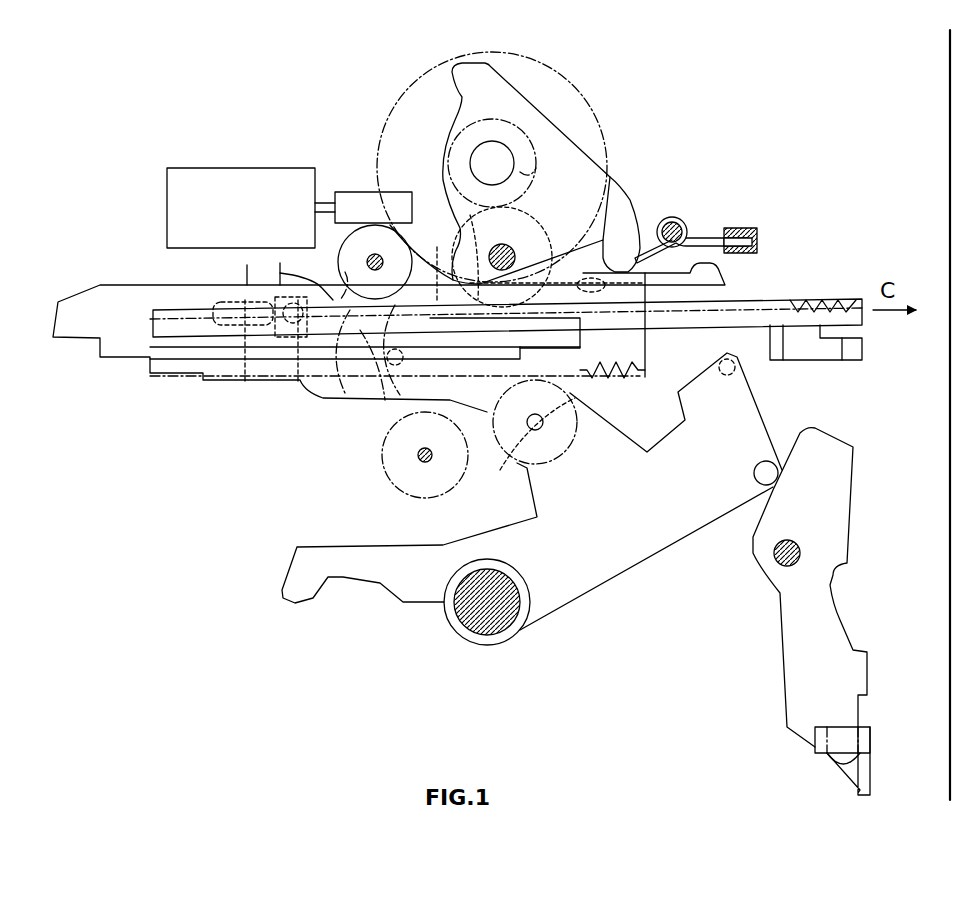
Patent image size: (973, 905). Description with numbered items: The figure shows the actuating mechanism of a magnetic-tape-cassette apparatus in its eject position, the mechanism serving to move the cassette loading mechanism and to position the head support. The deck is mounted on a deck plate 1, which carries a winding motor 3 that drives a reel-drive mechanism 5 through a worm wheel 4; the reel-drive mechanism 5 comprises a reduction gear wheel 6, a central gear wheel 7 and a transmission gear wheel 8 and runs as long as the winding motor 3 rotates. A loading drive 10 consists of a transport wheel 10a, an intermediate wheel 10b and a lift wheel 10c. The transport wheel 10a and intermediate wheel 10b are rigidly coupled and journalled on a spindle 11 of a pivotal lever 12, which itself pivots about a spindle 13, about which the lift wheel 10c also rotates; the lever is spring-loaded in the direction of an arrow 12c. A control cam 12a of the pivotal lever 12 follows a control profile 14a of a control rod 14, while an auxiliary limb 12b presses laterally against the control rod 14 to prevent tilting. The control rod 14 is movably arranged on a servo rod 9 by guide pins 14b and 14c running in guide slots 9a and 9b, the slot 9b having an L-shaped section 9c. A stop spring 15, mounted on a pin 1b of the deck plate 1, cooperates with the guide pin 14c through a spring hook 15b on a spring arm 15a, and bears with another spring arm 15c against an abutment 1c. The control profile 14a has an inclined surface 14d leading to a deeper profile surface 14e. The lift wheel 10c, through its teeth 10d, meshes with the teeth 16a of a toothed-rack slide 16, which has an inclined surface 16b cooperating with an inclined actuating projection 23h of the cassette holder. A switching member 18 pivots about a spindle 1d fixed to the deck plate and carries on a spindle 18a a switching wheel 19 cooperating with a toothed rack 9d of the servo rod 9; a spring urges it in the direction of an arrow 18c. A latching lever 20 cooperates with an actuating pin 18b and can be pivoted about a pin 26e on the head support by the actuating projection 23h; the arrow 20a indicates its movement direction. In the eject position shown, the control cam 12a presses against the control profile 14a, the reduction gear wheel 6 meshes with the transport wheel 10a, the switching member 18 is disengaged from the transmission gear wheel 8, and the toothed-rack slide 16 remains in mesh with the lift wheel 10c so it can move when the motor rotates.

The deck plate 1 is at (950, 185).
The pin 1b is at (684, 224).
The abutment 1c is at (758, 240).
The spindle 1d is at (490, 622).
The winding motor 3 is at (252, 180).
The worm wheel 4 is at (362, 192).
The reel-drive mechanism 5 is at (346, 446).
The reduction gear wheel 6 is at (347, 268).
The central gear wheel 7 is at (380, 415).
The transmission gear wheel 8 is at (402, 483).
The servo rod 9 is at (126, 285).
The guide slot 9a is at (243, 373).
The guide slot 9b is at (340, 393).
The L-shaped section 9c is at (363, 390).
The toothed rack 9d is at (632, 372).
The loading drive 10 is at (614, 120).
The transport wheel 10a is at (556, 58).
The intermediate wheel 10b is at (525, 178).
The lift wheel 10c is at (522, 225).
The teeth 10d is at (460, 214).
The spindle 11 is at (487, 158).
The pivotal lever 12 is at (442, 173).
The control cam 12a is at (627, 222).
The auxiliary limb 12b is at (604, 288).
The arrow 12c is at (562, 108).
The spindle 13 is at (502, 244).
The control rod 14 is at (666, 286).
The control profile 14a is at (722, 273).
The guide pin 14b is at (228, 296).
The guide pin 14c is at (378, 250).
The inclined surface 14d is at (606, 320).
The profile surface 14e is at (308, 268).
The stop spring 15 is at (670, 218).
The spring arm 15a is at (591, 383).
The spring hook 15b is at (445, 238).
The spring arm 15c is at (713, 237).
The toothed-rack slide 16 is at (153, 323).
The teeth 16a is at (820, 300).
The inclined surface 16b is at (818, 352).
The switching member 18 is at (578, 590).
The spindle 18a is at (517, 463).
The actuating pin 18b is at (754, 473).
The arrow 18c is at (665, 553).
The switching wheel 19 is at (553, 456).
The latching lever 20 is at (830, 602).
The lever direction 20a is at (786, 668).
The actuating projection 23h is at (872, 737).
The pin 26e is at (774, 553).